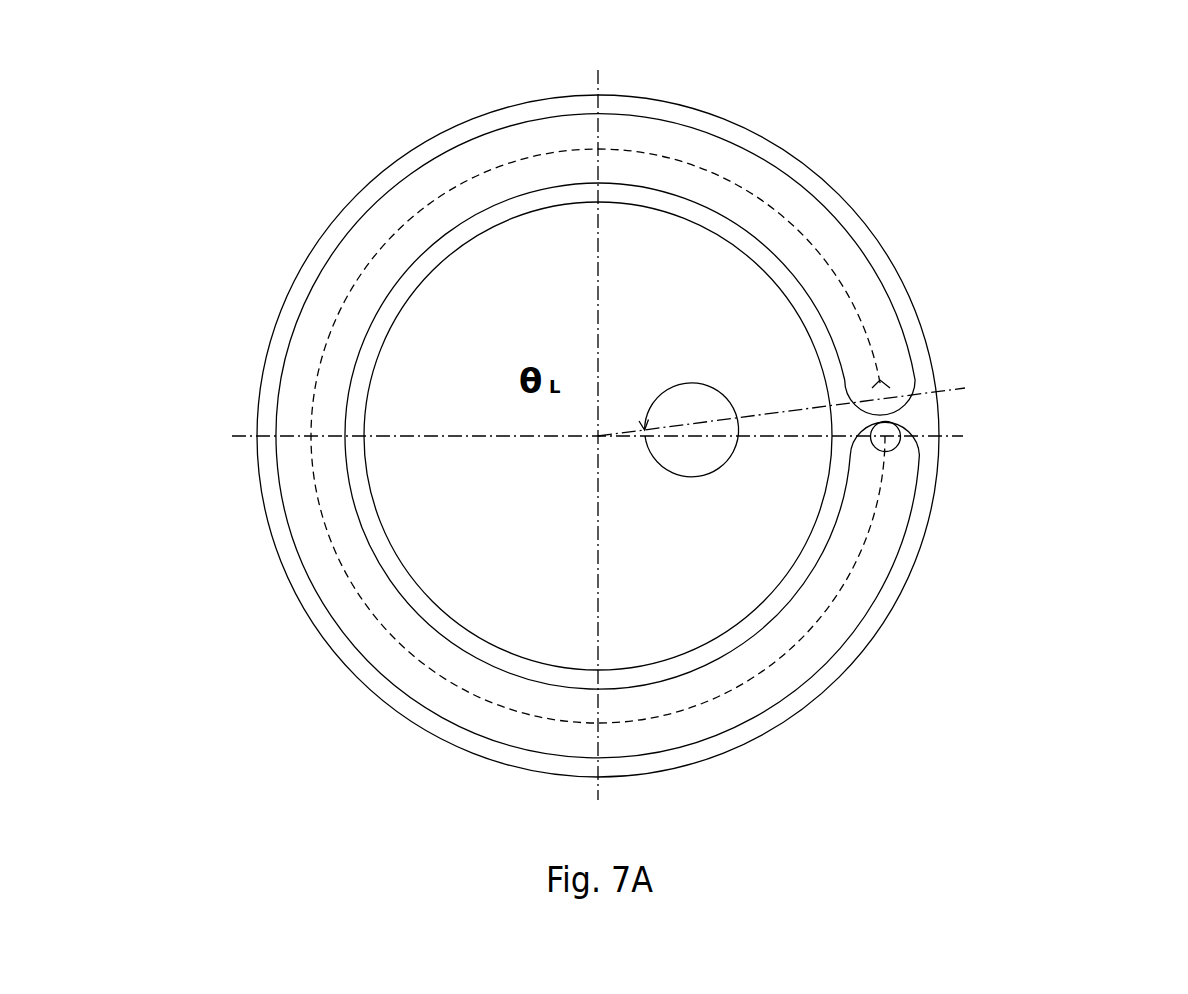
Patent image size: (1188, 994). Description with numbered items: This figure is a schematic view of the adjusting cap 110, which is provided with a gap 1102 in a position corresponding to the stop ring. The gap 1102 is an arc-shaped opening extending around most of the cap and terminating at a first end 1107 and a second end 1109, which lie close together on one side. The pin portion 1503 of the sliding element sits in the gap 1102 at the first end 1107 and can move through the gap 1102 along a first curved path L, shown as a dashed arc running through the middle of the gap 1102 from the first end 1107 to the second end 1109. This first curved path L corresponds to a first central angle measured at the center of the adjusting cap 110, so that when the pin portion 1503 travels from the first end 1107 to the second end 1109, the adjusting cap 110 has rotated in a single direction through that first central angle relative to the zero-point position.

The adjusting cap 110 is at (262, 168).
The gap 1102 is at (823, 605).
The second end 1109 is at (905, 402).
The first end 1107 is at (898, 420).
The pin portion 1503 is at (918, 448).
The first curved path L is at (794, 226).